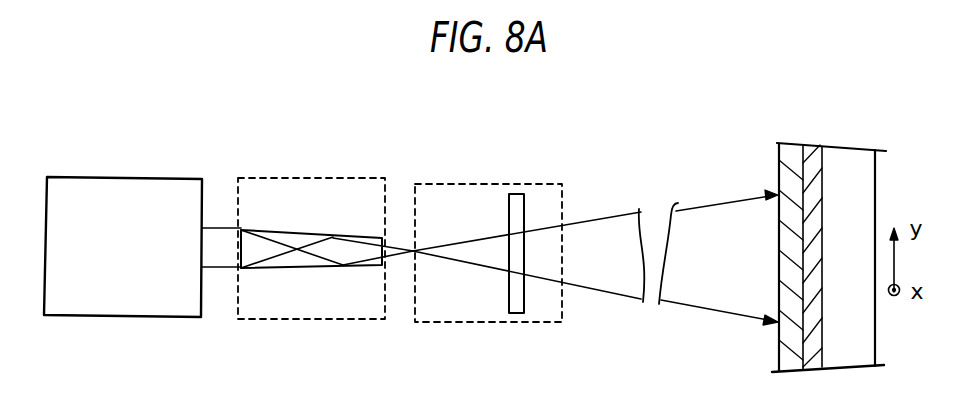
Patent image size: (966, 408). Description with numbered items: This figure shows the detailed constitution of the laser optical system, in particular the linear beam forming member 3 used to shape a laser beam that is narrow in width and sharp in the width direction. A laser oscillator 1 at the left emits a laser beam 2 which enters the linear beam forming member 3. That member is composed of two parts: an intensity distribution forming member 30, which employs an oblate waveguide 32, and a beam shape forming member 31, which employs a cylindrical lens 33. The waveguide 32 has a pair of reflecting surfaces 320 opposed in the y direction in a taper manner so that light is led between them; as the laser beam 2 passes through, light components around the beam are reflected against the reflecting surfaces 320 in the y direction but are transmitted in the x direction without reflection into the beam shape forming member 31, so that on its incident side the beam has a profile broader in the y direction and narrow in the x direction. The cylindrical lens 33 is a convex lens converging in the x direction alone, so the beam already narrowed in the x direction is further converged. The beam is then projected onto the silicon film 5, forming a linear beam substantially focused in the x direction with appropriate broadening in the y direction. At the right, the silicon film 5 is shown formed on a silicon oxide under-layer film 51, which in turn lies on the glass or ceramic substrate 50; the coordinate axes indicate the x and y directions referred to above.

The laser oscillator 1 is at (191, 178).
The laser beam 2 is at (224, 270).
The linear beam forming member 3 is at (358, 127).
The intensity distribution forming member 30 is at (356, 178).
The beam shape forming member 31 is at (447, 183).
The waveguide 32 is at (327, 268).
The reflecting surfaces 320 is at (318, 231).
The cylindrical lens 33 is at (509, 211).
The silicon film 5 is at (823, 234).
The under-layer film 51 is at (815, 146).
The substrate 50 is at (850, 151).